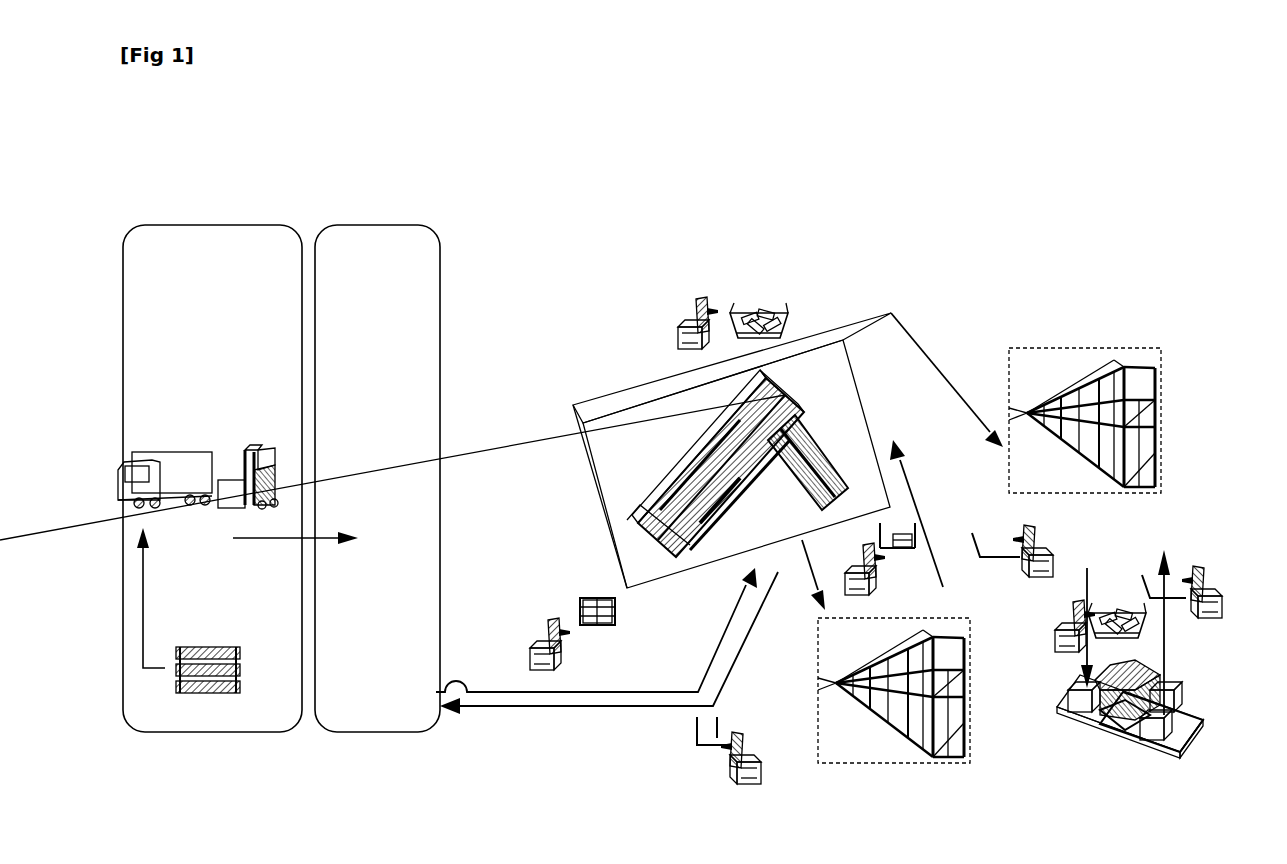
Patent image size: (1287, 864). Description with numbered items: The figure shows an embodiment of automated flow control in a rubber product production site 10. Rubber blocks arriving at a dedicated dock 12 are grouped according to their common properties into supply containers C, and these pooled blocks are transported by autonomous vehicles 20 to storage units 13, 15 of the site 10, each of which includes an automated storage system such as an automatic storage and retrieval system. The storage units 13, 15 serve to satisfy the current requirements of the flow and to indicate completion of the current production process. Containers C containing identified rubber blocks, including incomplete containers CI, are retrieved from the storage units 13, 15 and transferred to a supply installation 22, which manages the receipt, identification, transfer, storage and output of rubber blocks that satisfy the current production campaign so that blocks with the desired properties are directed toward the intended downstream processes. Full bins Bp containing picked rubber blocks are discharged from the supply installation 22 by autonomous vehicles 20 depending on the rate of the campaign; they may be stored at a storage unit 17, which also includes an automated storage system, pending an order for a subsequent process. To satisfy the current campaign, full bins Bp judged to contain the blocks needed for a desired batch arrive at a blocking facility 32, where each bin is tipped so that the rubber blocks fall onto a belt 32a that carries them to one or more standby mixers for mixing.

The rubber product production site 10 is at (600, 225).
The dock 12 is at (208, 245).
The storage unit 13 is at (375, 250).
The storage unit 15 is at (903, 735).
The storage unit 17 is at (1160, 405).
The autonomous vehicle (AGV) 20 is at (683, 320).
The supply installation 22 is at (830, 358).
The blocking facility 32 is at (1165, 723).
The belt 32a is at (1193, 745).
The supply container C is at (768, 303).
The incomplete container CI is at (897, 527).
The full bin Bp is at (1118, 712).